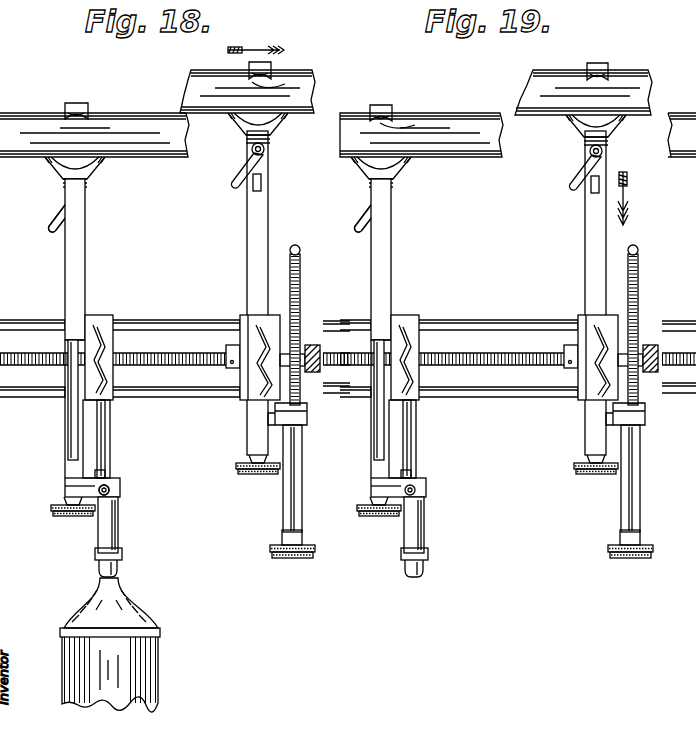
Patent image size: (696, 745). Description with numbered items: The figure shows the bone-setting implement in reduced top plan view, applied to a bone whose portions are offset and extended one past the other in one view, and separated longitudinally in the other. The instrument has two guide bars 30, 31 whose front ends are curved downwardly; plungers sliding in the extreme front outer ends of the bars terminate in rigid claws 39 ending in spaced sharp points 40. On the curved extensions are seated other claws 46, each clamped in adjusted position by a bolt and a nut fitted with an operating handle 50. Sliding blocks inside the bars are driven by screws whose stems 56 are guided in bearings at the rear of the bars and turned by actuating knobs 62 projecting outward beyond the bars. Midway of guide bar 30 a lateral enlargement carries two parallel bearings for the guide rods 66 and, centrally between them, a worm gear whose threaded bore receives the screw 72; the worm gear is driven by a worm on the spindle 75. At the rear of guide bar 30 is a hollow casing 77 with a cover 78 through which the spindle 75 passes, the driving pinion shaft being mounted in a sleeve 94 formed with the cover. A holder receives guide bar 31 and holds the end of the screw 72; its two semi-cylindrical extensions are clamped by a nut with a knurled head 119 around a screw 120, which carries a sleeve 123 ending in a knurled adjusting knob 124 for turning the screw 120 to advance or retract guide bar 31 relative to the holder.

In FIG. 18, the guide bar 30 is at (80, 453).
In FIG. 19, the guide bar 30 is at (380, 283).
In FIG. 18, the guide bar 31 is at (262, 220).
In FIG. 19, the guide bar 31 is at (596, 238).
In FIG. 18, the rigid claw 39 is at (248, 67).
In FIG. 19, the rigid claw 39 is at (600, 67).
In FIG. 18, the sharp point 40 is at (253, 90).
In FIG. 19, the sharp point 40 is at (410, 123).
In FIG. 18, the claw 46 is at (58, 158).
In FIG. 19, the claw 46 is at (410, 165).
In FIG. 18, the operating handle 50 is at (52, 225).
In FIG. 19, the operating handle 50 is at (382, 238).
In FIG. 18, the screw stem 56 is at (70, 439).
In FIG. 19, the screw stem 56 is at (381, 440).
In FIG. 18, the actuating knob 62 is at (63, 522).
In FIG. 19, the actuating knob 62 is at (370, 522).
In FIG. 18, the guide rod 66 is at (148, 388).
In FIG. 19, the guide rod 66 is at (470, 390).
In FIG. 18, the screw 72 is at (186, 355).
In FIG. 19, the screw 72 is at (521, 357).
In FIG. 18, the spindle 75 is at (106, 432).
In FIG. 19, the spindle 75 is at (411, 418).
In FIG. 18, the casing 77 is at (120, 490).
In FIG. 19, the casing 77 is at (421, 489).
In FIG. 18, the cover 78 is at (118, 506).
In FIG. 18, the sleeve 94 is at (119, 535).
In FIG. 19, the sleeve 94 is at (424, 535).
In FIG. 18, the knurled head 119 is at (312, 342).
In FIG. 19, the knurled head 119 is at (648, 345).
In FIG. 18, the screw 120 is at (299, 256).
In FIG. 19, the screw 120 is at (637, 253).
In FIG. 18, the sleeve 123 is at (300, 494).
In FIG. 19, the sleeve 123 is at (638, 480).
In FIG. 18, the knurled adjusting knob 124 is at (290, 554).
In FIG. 19, the knurled adjusting knob 124 is at (613, 557).